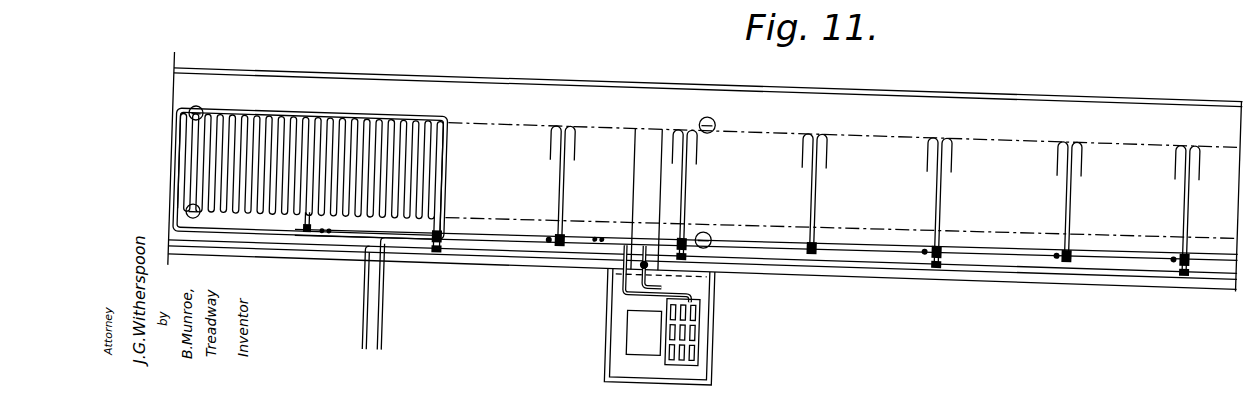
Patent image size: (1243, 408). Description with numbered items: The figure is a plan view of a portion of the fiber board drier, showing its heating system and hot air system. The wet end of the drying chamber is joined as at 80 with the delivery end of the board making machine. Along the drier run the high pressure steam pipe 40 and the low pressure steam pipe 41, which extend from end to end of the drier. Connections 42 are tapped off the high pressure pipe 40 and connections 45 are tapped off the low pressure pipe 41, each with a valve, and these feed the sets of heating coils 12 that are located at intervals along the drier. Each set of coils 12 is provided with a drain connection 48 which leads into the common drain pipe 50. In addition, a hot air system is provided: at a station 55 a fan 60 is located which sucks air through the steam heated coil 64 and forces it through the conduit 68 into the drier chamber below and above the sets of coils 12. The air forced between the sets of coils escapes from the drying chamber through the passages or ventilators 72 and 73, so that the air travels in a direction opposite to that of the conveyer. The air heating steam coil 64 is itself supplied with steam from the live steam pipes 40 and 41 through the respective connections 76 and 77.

The heating coils 12 is at (333, 118).
The high pressure steam pipe 40 is at (283, 234).
The low pressure steam pipe 41 is at (387, 326).
The connection 42 is at (432, 251).
The connection 45 is at (926, 243).
The drain connection 48 is at (548, 247).
The common drain pipe 50 is at (600, 234).
The station 55 is at (713, 338).
The fan 60 is at (641, 339).
The steam heated coil 64 is at (686, 346).
The conduit 68 is at (640, 163).
The passage or ventilator 72 is at (204, 108).
The passage or ventilator 73 is at (717, 123).
The connection 76 is at (623, 284).
The connection 77 is at (640, 299).
The joint 80 is at (173, 78).